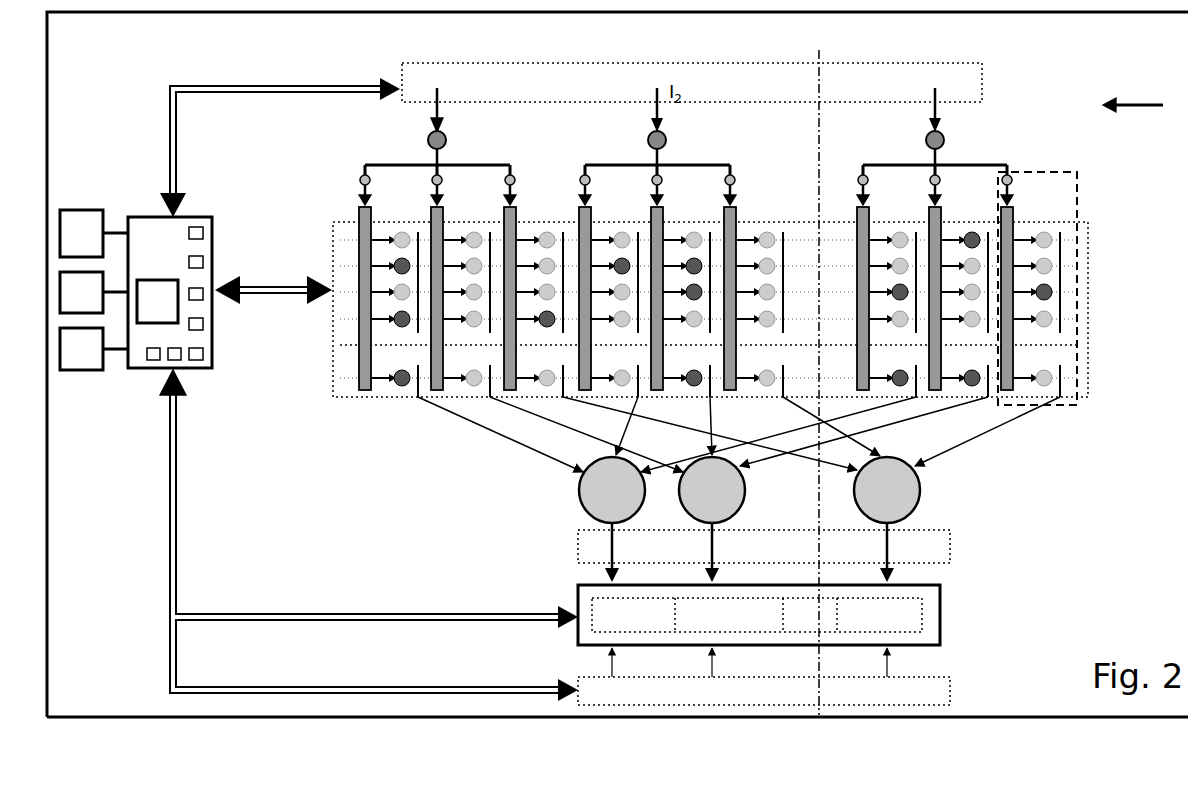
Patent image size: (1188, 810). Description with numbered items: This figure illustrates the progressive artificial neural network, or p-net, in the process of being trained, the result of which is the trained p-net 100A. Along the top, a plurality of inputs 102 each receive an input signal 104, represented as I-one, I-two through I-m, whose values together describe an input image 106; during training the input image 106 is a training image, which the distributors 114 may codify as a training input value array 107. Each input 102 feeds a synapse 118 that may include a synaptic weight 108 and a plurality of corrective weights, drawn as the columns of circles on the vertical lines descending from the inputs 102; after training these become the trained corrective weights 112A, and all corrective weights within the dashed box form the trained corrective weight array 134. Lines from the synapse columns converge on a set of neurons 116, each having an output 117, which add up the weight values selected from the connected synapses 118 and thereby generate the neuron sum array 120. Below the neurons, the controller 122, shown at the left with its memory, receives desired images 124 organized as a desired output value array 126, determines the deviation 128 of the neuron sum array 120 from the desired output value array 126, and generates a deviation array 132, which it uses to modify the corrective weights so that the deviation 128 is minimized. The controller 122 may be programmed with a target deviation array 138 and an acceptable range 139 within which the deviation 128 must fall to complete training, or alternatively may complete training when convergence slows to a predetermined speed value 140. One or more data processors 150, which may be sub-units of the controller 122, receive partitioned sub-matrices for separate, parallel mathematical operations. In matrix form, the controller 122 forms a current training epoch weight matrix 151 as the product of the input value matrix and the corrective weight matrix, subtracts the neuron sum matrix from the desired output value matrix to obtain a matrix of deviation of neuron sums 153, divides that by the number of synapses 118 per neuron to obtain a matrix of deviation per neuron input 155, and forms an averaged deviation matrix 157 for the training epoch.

The trained p-net 100A is at (1140, 96).
The input 102 is at (449, 139).
The input signal 104 is at (438, 90).
The input image 106 is at (540, 60).
The training input value array 107 is at (970, 80).
The synaptic weight 108 is at (356, 180).
The trained corrective weights 112A is at (398, 292).
The distributor 114 is at (355, 320).
The neuron 116 is at (900, 500).
The output 117 is at (610, 546).
The synapse 118 is at (1080, 188).
The neuron sum array 120 is at (953, 548).
The controller 122 is at (127, 364).
The desired images 124 is at (892, 668).
The desired output value array 126 is at (953, 700).
The deviation 128 is at (905, 618).
The deviation array 132 is at (927, 612).
The trained corrective weight array 134 is at (1094, 308).
The target deviation array 138 is at (195, 227).
The acceptable range 139 is at (150, 362).
The predetermined speed value 140 is at (170, 377).
The data processor 150 is at (157, 280).
The current training epoch weight matrix 151 is at (203, 260).
The matrix of deviation of neuron sums 153 is at (196, 296).
The matrix of deviation per neuron input 155 is at (196, 326).
The averaged deviation matrix 157 is at (203, 362).